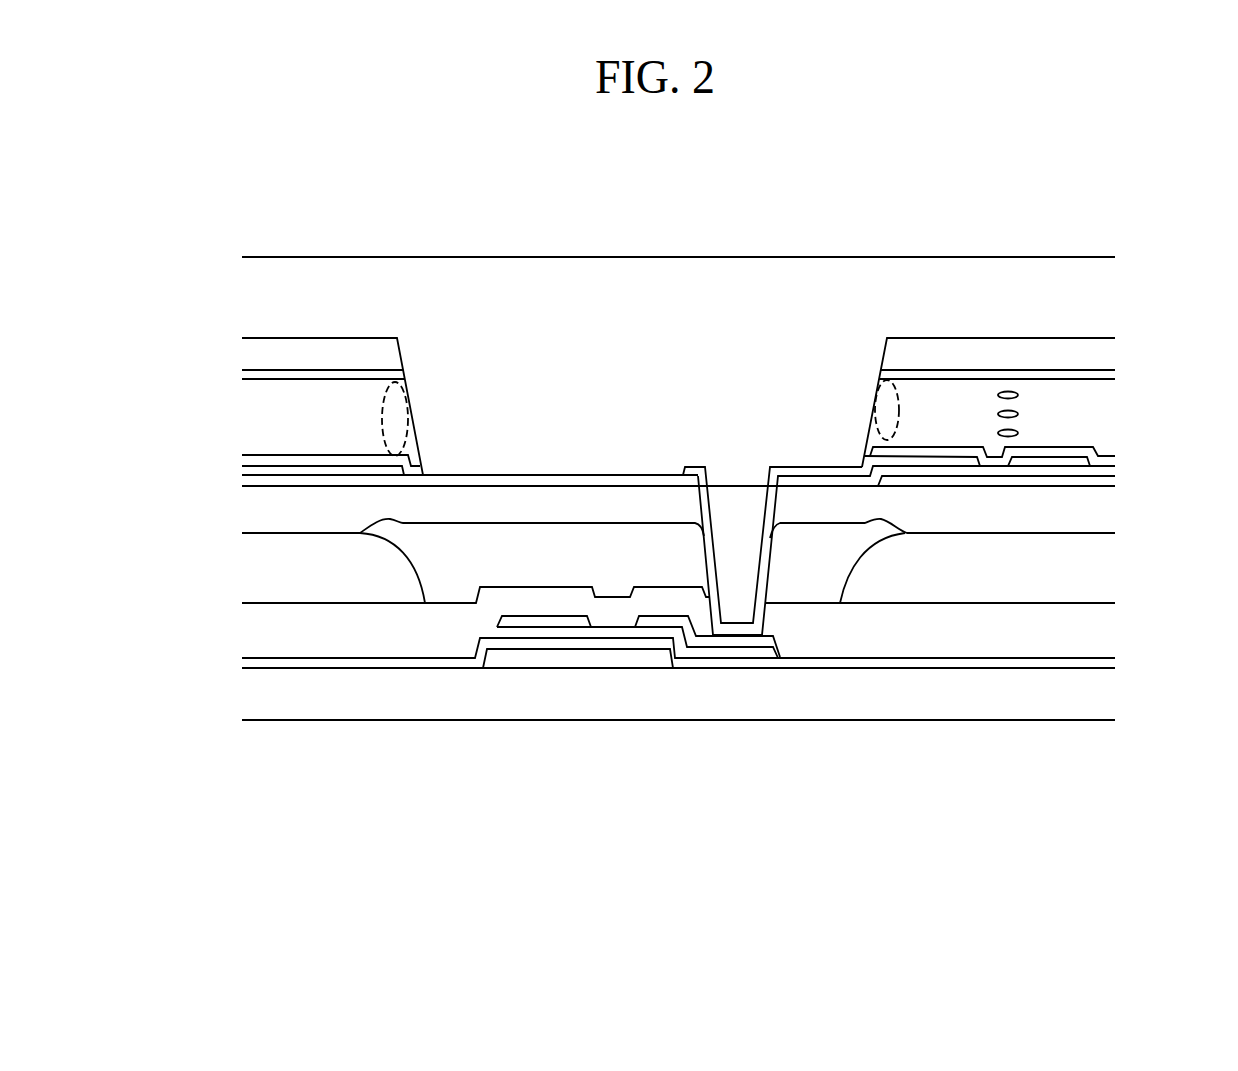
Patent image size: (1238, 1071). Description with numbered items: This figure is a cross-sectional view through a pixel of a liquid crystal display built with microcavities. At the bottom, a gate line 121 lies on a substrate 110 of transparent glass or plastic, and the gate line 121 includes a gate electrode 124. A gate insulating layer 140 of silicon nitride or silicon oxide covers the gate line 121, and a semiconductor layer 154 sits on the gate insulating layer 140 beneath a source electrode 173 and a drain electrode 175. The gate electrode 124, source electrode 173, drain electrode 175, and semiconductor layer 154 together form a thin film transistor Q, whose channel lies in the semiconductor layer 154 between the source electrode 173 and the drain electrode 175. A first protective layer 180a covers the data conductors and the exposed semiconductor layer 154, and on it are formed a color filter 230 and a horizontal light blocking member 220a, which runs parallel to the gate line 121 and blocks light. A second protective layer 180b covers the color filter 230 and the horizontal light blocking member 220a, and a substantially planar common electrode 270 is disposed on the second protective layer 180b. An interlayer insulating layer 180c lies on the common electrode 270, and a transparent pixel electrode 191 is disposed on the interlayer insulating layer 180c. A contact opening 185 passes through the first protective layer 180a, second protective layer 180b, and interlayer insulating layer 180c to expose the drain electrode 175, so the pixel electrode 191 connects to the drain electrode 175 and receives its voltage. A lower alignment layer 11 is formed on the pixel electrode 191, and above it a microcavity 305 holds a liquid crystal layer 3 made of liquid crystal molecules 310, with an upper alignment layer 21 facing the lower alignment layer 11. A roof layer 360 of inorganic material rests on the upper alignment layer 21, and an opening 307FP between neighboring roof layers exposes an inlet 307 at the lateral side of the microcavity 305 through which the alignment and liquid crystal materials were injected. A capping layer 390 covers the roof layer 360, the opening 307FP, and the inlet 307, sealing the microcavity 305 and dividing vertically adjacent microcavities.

The capping layer 390 is at (712, 283).
The roof layer 360 is at (712, 404).
The upper alignment layer 21 is at (708, 381).
The liquid crystal layer 3 is at (1023, 407).
The liquid crystal molecules 310 is at (1038, 413).
The lower alignment layer 11 is at (710, 448).
The pixel electrode 191 is at (712, 545).
The interlayer insulating layer 180c is at (678, 618).
The common electrode 270 is at (996, 621).
The second protective layer 180b is at (678, 516).
The color filter 230 is at (679, 568).
The first protective layer 180a is at (718, 611).
The gate insulating layer 140 is at (712, 655).
The substrate 110 is at (712, 694).
The gate electrode 124 is at (578, 708).
The gate line 121 is at (466, 713).
The semiconductor layer 154 is at (637, 697).
The source electrode 173 is at (544, 692).
The drain electrode 175 is at (707, 692).
The horizontal light blocking member 220a is at (609, 670).
The contact opening 185 is at (740, 448).
The opening 307FP is at (591, 324).
The inlet 307 is at (640, 400).
The microcavity 305 is at (637, 303).
The thin film transistor Q is at (598, 791).